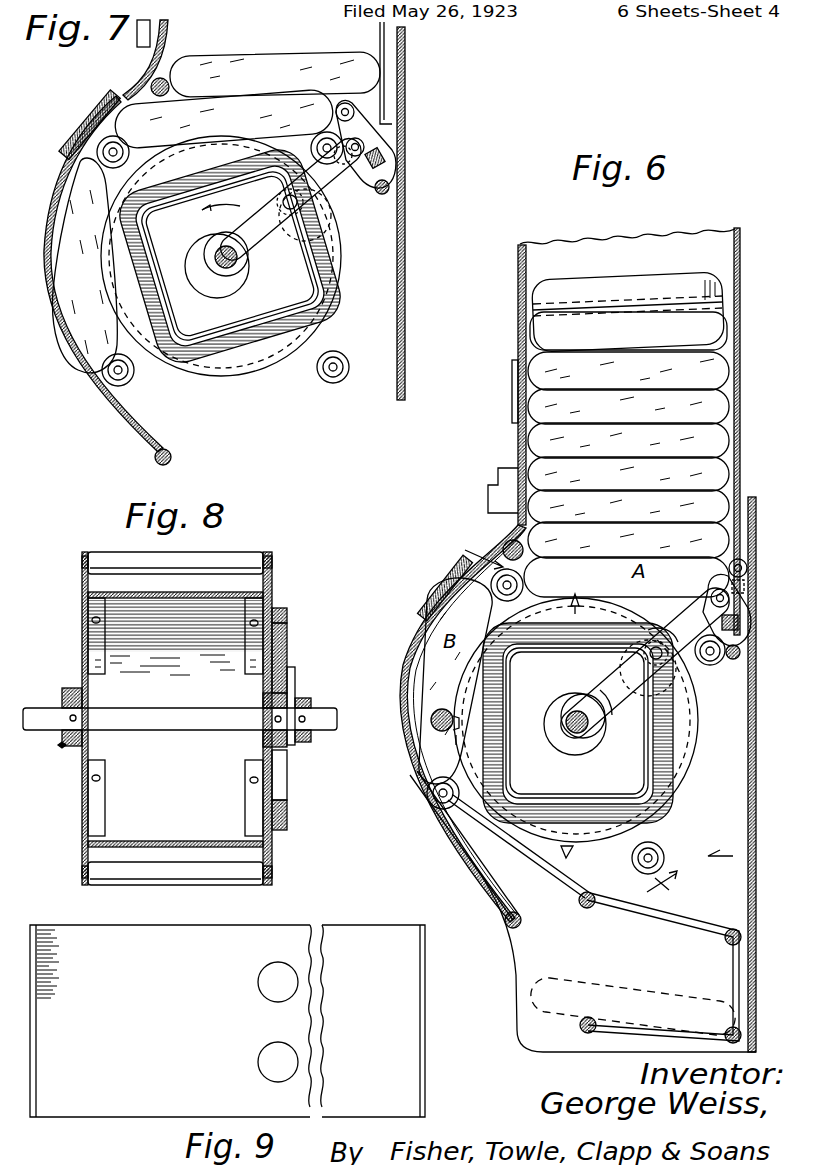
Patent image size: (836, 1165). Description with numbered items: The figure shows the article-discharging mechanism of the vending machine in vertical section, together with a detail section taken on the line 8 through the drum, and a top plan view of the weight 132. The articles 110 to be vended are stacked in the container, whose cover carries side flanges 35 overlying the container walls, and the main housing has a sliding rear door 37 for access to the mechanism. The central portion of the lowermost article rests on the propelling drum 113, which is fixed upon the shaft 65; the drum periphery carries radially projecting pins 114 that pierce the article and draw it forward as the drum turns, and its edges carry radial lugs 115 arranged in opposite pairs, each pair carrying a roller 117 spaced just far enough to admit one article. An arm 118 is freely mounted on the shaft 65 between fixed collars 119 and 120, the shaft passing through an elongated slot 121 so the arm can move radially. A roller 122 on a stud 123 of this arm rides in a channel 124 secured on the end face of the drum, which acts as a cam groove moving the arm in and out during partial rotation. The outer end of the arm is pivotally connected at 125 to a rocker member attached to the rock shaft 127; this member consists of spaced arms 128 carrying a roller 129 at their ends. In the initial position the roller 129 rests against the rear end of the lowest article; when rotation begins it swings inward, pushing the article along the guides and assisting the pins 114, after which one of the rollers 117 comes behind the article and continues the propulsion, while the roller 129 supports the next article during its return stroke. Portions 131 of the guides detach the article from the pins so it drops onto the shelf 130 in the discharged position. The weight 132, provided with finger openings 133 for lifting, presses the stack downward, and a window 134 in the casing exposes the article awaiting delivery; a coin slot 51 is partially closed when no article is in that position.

In FIG. 6, the section line 8 is at (571, 718).
In FIG. 6, the side flanges 35 is at (516, 452).
In FIG. 7, the sliding rear door 37 is at (405, 215).
In FIG. 6, the sliding rear door 37 is at (748, 862).
In FIG. 6, the coin slot 51 is at (514, 392).
In FIG. 7, the shaft 65 is at (215, 258).
In FIG. 8, the shaft 65 is at (178, 722).
In FIG. 6, the shaft 65 is at (585, 725).
In FIG. 7, the articles 110 is at (260, 98).
In FIG. 6, the articles 110 is at (735, 450).
In FIG. 8, the propelling drum 113 is at (164, 842).
In FIG. 7, the radially projecting pins 114 is at (258, 386).
In FIG. 6, the radially projecting pins 114 is at (590, 862).
In FIG. 7, the radial lugs 115 is at (325, 338).
In FIG. 8, the radial lugs 115 is at (269, 586).
In FIG. 6, the radial lugs 115 is at (510, 603).
In FIG. 7, the roller 117 is at (336, 360).
In FIG. 8, the roller 117 is at (218, 563).
In FIG. 6, the roller 117 is at (518, 592).
In FIG. 7, the arm 118 is at (260, 248).
In FIG. 8, the arm 118 is at (293, 674).
In FIG. 6, the arm 118 is at (612, 672).
In FIG. 7, the fixed collar 119 is at (208, 252).
In FIG. 8, the fixed collar 119 is at (262, 704).
In FIG. 6, the fixed collar 119 is at (575, 724).
In FIG. 7, the fixed collar 120 is at (240, 280).
In FIG. 8, the fixed collar 120 is at (306, 745).
In FIG. 6, the fixed collar 120 is at (573, 745).
In FIG. 6, the elongated slot 121 is at (593, 695).
In FIG. 7, the roller 122 is at (330, 233).
In FIG. 6, the roller 122 is at (625, 674).
In FIG. 7, the stud 123 is at (320, 202).
In FIG. 6, the stud 123 is at (660, 632).
In FIG. 7, the channel 124 is at (284, 335).
In FIG. 8, the channel 124 is at (287, 622).
In FIG. 6, the channel 124 is at (498, 682).
In FIG. 7, the pivotal connection 125 is at (363, 143).
In FIG. 6, the pivotal connection 125 is at (716, 596).
In FIG. 7, the rock shaft 127 is at (387, 158).
In FIG. 6, the rock shaft 127 is at (740, 624).
In FIG. 6, the spaced arms 128 is at (745, 600).
In FIG. 7, the roller 129 is at (360, 113).
In FIG. 6, the roller 129 is at (747, 568).
In FIG. 6, the shelf 130 is at (612, 1030).
In FIG. 6, the portions of the guides 131 is at (541, 862).
In FIG. 9, the weight 132 is at (101, 1112).
In FIG. 6, the weight 132 is at (598, 290).
In FIG. 9, the finger openings 133 is at (259, 998).
In FIG. 7, the window 134 is at (90, 118).
In FIG. 6, the window 134 is at (445, 590).